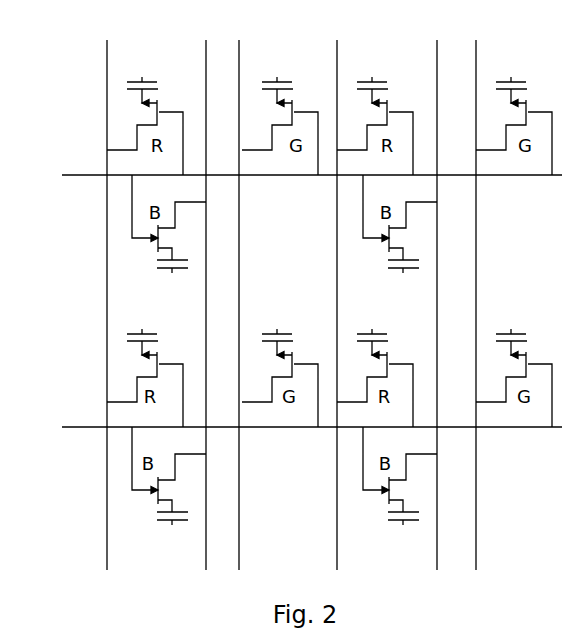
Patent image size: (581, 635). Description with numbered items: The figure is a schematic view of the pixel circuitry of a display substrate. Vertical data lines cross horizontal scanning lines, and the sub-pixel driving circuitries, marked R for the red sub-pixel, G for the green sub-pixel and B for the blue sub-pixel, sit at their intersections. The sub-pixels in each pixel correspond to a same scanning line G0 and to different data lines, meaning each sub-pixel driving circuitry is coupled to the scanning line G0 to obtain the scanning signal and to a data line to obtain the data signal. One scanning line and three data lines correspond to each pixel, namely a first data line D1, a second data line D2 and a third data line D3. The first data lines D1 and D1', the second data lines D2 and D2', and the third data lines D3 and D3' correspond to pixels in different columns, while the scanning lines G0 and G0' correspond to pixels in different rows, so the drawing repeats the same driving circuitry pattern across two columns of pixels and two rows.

The first data line D1 is at (107, 292).
The third data line D3 is at (201, 292).
The second data line D2 is at (247, 292).
The first data line D1' is at (340, 292).
The third data line D3' is at (439, 292).
The second data line D2' is at (487, 292).
The scanning line G0 is at (285, 178).
The scanning line G0' is at (284, 428).